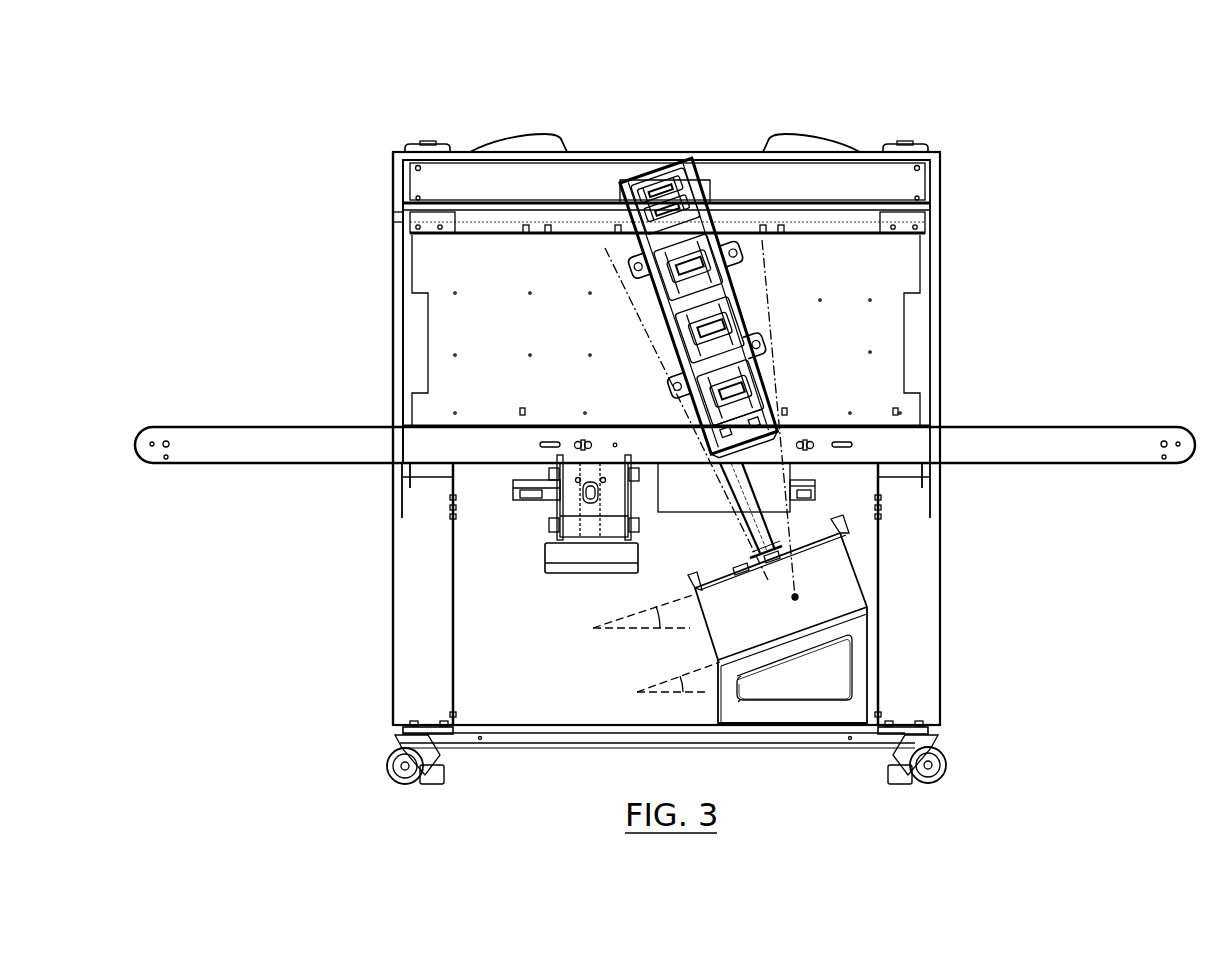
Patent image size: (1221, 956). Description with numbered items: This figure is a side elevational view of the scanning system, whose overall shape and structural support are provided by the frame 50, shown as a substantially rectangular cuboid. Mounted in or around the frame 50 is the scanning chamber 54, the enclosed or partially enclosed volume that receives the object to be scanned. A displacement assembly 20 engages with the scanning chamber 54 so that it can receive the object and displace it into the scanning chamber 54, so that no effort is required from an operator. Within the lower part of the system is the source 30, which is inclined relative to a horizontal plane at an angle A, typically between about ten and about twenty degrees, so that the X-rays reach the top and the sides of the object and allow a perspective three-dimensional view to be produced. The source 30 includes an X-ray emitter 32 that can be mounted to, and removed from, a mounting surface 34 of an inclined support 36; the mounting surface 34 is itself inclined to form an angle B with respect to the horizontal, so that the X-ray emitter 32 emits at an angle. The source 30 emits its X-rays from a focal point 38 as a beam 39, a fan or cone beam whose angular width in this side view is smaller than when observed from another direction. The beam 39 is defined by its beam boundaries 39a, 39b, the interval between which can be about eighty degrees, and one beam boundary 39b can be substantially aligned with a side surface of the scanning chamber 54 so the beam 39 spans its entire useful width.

The displacement assembly 20 is at (147, 398).
The source 30 is at (798, 618).
The X-ray emitter 32 is at (740, 617).
The mounting surface 34 is at (858, 604).
The inclined support 36 is at (860, 654).
The focal point 38 is at (795, 601).
The beam 39 is at (774, 350).
The beam boundary 39a is at (767, 288).
The beam boundary 39b is at (632, 295).
The frame 50 is at (975, 178).
The scanning chamber 54 is at (390, 323).